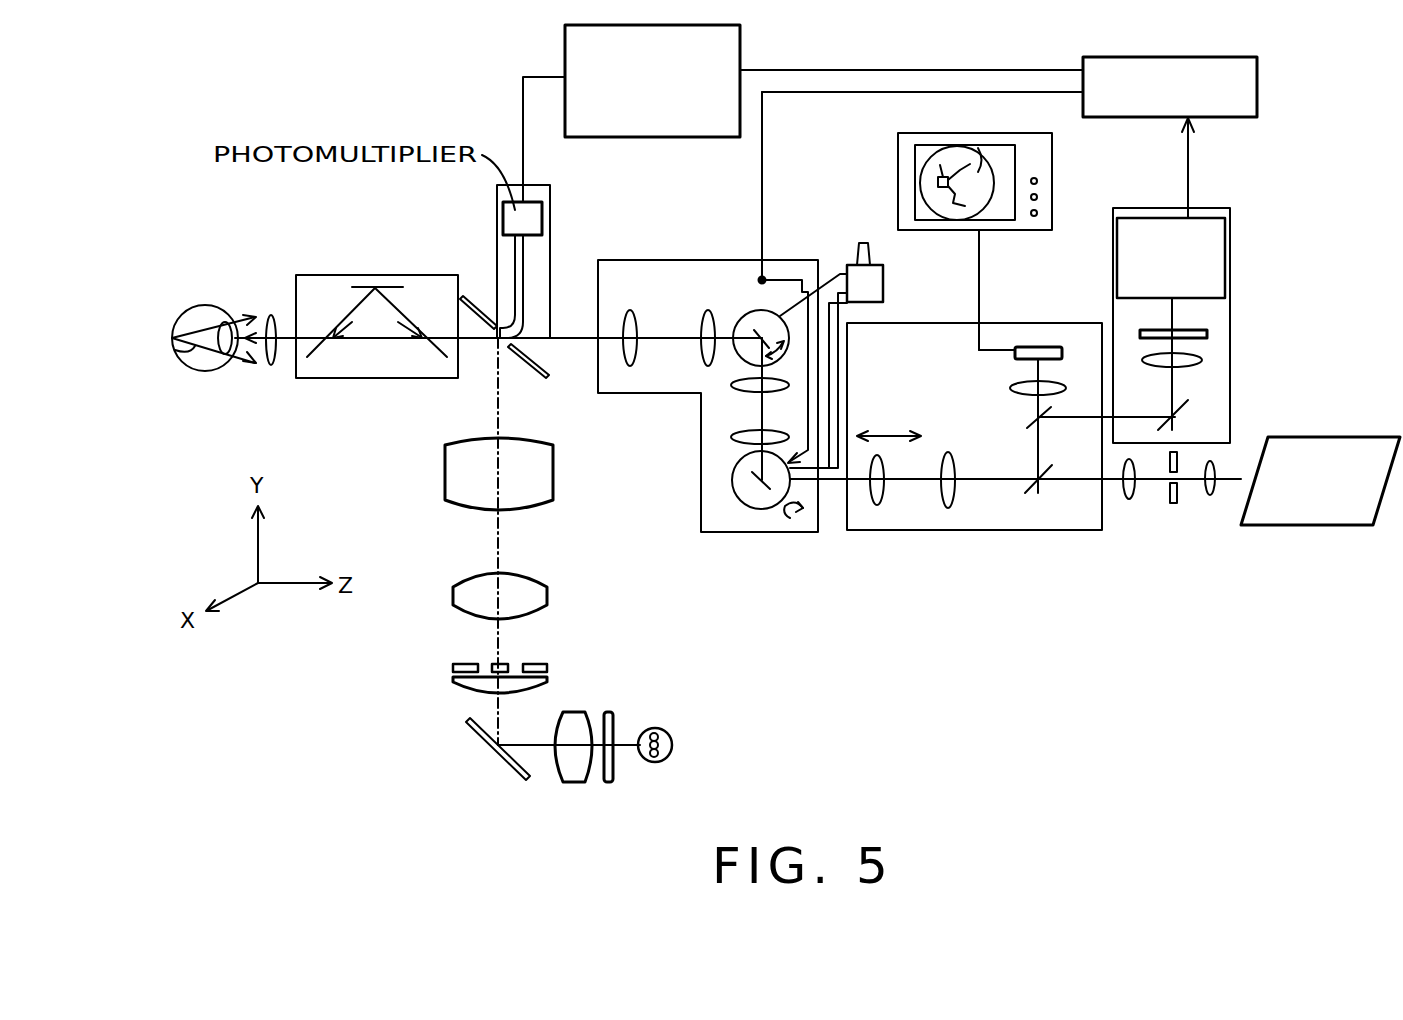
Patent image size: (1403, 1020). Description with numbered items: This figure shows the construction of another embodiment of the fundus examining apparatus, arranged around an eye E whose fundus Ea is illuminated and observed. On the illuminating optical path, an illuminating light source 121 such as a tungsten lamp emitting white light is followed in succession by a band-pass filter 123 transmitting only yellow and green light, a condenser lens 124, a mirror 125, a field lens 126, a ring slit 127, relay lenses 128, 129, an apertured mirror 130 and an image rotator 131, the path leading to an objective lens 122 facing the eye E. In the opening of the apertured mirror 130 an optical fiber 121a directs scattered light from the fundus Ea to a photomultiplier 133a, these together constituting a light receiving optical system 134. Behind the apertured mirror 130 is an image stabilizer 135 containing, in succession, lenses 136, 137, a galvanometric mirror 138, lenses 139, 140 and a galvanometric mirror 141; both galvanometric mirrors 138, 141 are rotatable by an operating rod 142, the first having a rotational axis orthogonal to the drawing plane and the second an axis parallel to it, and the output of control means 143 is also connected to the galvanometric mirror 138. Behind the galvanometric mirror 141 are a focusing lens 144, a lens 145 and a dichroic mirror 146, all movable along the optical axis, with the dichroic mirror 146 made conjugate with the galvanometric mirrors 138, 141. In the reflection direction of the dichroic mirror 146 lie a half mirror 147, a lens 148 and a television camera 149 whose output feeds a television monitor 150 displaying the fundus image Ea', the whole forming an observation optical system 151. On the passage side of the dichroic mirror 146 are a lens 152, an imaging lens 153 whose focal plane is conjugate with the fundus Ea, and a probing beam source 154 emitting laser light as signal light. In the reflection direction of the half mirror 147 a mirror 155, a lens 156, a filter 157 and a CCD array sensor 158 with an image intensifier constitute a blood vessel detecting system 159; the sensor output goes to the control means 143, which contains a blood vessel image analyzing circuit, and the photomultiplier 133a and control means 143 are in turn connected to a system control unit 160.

The eye E is at (198, 308).
The fundus of the eye Ea is at (192, 387).
The fundus image Ea' is at (1005, 135).
The illuminating light source 121 is at (673, 745).
The optical fiber 121a is at (523, 287).
The objective lens 122 is at (270, 313).
The band-pass filter 123 is at (612, 720).
The condenser lens 124 is at (573, 712).
The mirror 125 is at (480, 745).
The field lens 126 is at (456, 684).
The ring slit 127 is at (466, 664).
The relay lens 128 is at (463, 593).
The relay lens 129 is at (455, 477).
The apertured mirror 130 is at (535, 380).
The image rotator 131 is at (392, 380).
The photomultiplier 133a is at (512, 215).
The light receiving optical system 134 is at (550, 185).
The image stabilizer 135 is at (648, 260).
The lens 136 is at (628, 368).
The lens 137 is at (708, 310).
The galvanometric mirror 138 is at (762, 335).
The lens 139 is at (735, 392).
The lens 140 is at (735, 442).
The galvanometric mirror 141 is at (755, 480).
The operating rod 142 is at (883, 283).
The control means 143 is at (1257, 90).
The focusing lens 144 is at (877, 508).
The lens 145 is at (948, 510).
The dichroic mirror 146 is at (1032, 493).
The half mirror 147 is at (1032, 420).
The lens 148 is at (1012, 388).
The television camera 149 is at (1045, 350).
The television monitor 150 is at (1045, 168).
The observation optical system 151 is at (1000, 532).
The lens 152 is at (1130, 500).
The imaging lens 153 is at (1210, 497).
The probing beam source 154 is at (1332, 527).
The mirror 155 is at (1190, 412).
The lens 156 is at (1203, 360).
The filter 157 is at (1207, 334).
The CCD array sensor 158 is at (1225, 237).
The blood vessel detecting system 159 is at (1230, 300).
The system control unit 160 is at (740, 48).